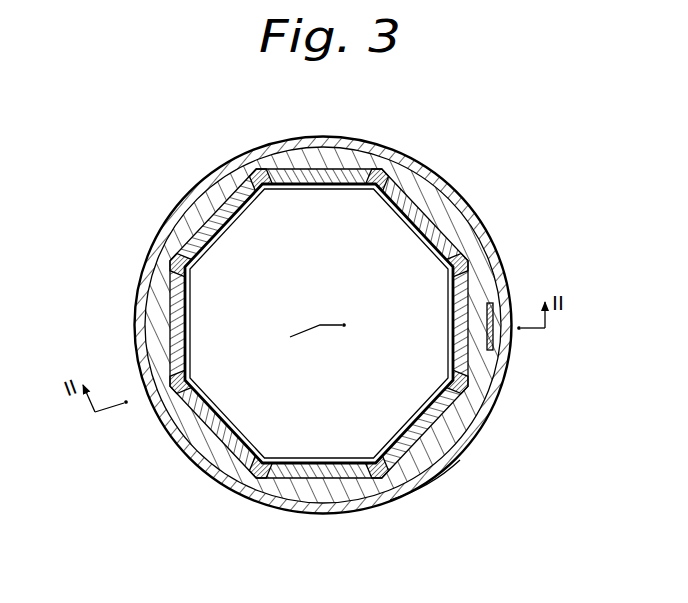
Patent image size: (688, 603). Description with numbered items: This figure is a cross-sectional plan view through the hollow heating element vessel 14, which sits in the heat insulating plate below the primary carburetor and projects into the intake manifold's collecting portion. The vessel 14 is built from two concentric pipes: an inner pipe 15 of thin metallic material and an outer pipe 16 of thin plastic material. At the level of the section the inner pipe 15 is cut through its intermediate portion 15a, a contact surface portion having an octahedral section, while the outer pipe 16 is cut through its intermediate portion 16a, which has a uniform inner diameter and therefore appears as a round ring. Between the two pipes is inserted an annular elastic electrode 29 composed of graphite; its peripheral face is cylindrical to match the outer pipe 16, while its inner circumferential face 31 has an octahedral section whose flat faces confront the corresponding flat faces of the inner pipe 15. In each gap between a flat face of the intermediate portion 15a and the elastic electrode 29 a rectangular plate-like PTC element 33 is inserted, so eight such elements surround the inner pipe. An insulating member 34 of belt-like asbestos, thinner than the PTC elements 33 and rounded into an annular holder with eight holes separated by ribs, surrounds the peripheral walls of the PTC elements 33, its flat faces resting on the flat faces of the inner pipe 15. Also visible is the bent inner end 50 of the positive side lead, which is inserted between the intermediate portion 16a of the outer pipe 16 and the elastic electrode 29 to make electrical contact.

The hollow heating element vessel 14 is at (472, 197).
The inner pipe 15 is at (190, 345).
The intermediate portion 15a is at (190, 307).
The outer pipe 16 is at (175, 203).
The intermediate portion 16a is at (158, 243).
The annular elastic electrode 29 is at (413, 183).
The inner circumferential face 31 is at (436, 473).
The PTC element 33 is at (225, 210).
The insulating member 34 is at (260, 172).
The inner end of positive side lead 50 is at (497, 312).